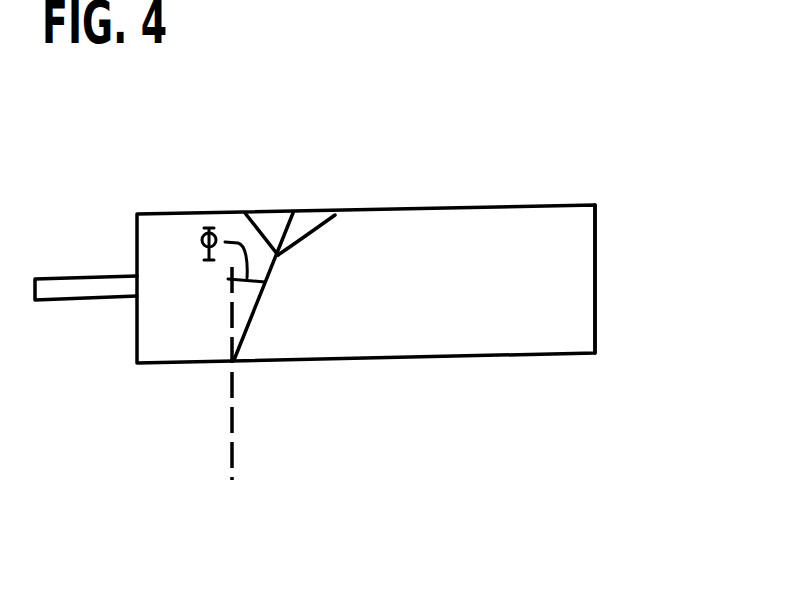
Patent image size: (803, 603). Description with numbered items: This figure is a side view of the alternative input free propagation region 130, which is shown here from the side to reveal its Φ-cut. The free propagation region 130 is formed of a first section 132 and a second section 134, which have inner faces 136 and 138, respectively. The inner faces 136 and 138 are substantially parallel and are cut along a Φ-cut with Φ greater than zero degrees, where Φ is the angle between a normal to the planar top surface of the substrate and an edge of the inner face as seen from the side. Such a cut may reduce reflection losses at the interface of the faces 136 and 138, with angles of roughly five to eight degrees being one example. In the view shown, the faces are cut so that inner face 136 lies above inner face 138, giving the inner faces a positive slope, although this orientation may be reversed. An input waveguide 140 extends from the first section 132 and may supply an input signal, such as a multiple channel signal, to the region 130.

The input free propagation region 130 is at (325, 122).
The first section 132 is at (152, 364).
The second section 134 is at (585, 326).
The inner face 136 is at (245, 213).
The inner face 138 is at (335, 215).
The input waveguide 140 is at (57, 302).